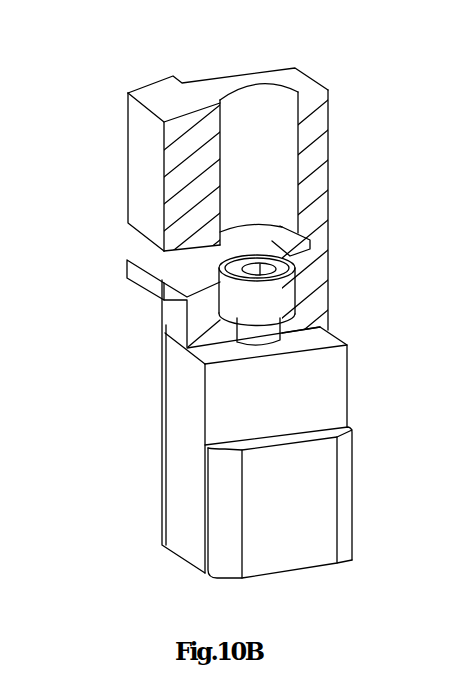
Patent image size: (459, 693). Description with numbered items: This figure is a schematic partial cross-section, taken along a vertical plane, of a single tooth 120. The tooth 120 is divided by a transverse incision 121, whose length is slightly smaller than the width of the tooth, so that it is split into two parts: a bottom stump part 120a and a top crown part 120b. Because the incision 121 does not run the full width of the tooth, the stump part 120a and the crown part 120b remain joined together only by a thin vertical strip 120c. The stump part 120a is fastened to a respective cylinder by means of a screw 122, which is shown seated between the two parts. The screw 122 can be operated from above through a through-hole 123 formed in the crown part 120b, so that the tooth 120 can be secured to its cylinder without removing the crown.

The tooth 120 is at (137, 513).
The bottom stump part 120a is at (177, 453).
The top crown part 120b is at (143, 178).
The thin vertical strip 120c is at (320, 247).
The transverse incision 121 is at (163, 260).
The screw 122 is at (250, 292).
The through-hole 123 is at (243, 122).